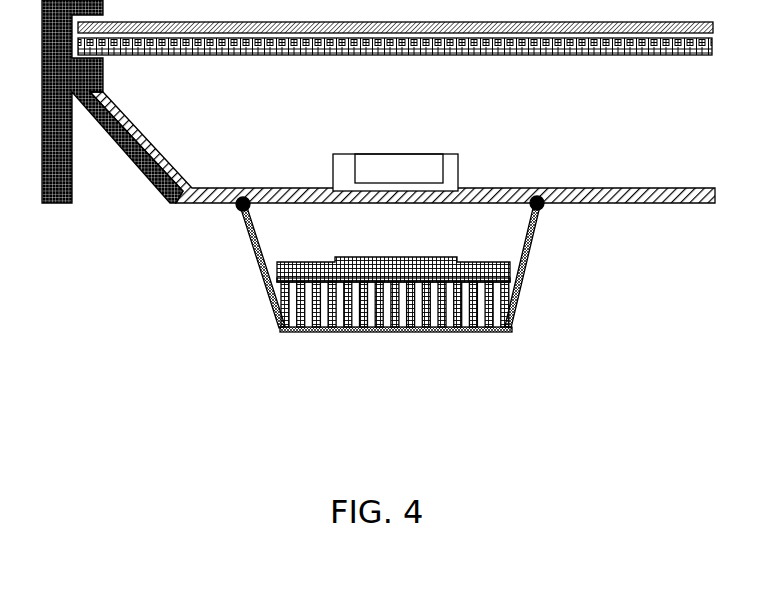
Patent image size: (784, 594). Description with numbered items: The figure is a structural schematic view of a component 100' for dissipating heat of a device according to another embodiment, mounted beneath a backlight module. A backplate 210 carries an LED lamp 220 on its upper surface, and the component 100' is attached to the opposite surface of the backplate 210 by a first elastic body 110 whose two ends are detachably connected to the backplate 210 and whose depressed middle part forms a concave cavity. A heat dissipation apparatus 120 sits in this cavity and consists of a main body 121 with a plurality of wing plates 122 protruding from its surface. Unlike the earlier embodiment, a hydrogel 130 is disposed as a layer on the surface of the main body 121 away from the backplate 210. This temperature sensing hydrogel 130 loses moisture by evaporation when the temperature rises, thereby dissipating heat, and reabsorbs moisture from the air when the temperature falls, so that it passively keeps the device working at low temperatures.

The backplate 210 is at (293, 188).
The light-emitting diode (LED) lamp 220 is at (393, 162).
The first elastic body 110 is at (288, 331).
The heat dissipation apparatus 120 is at (393, 337).
The main body 121 is at (383, 284).
The wing plate 122 is at (350, 309).
The hydrogel 130 is at (437, 266).
The component for dissipating heat of a device 100' is at (365, 447).